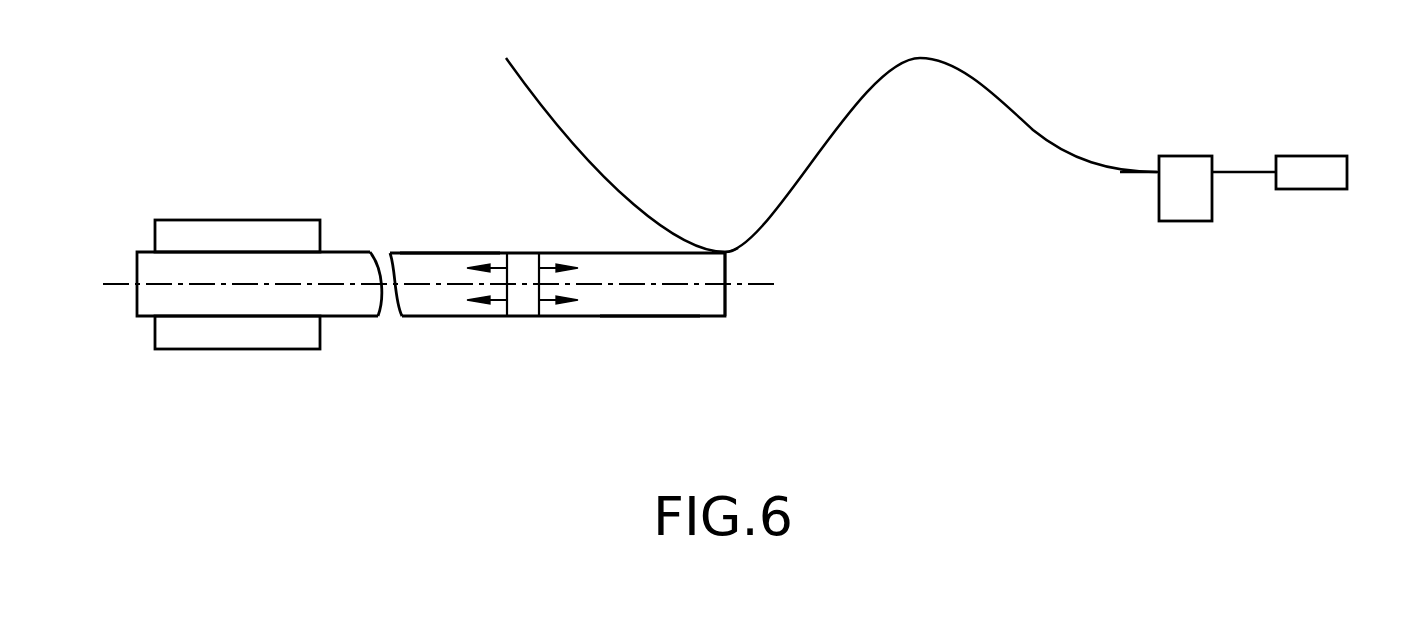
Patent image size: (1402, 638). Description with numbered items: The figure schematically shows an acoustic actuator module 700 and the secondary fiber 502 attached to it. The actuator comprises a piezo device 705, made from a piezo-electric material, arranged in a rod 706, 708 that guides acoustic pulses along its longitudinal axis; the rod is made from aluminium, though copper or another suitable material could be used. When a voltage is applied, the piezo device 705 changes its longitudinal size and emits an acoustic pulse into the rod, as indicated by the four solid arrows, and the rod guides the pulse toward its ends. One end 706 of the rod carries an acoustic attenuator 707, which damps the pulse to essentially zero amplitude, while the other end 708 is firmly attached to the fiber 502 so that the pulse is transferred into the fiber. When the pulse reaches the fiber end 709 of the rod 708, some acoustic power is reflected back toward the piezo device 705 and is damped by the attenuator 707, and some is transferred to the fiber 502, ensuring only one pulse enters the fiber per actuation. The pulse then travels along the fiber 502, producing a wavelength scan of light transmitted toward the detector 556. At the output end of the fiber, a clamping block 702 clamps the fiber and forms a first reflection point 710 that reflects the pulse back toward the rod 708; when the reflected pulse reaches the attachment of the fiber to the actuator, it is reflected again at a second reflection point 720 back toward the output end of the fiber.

The secondary fiber 502 is at (525, 85).
The detector 556 is at (1325, 189).
The acoustic actuator module 700 is at (470, 218).
The clamping block 702 is at (1212, 210).
The piezo device 705 is at (517, 305).
The rod end with acoustic attenuator 706 is at (347, 302).
The acoustic attenuator 707 is at (225, 228).
The rod end attached to fiber 708 is at (648, 305).
The fiber end of the rod 709 is at (725, 298).
The first reflection point 710 is at (1140, 192).
The second reflection point 720 is at (725, 240).